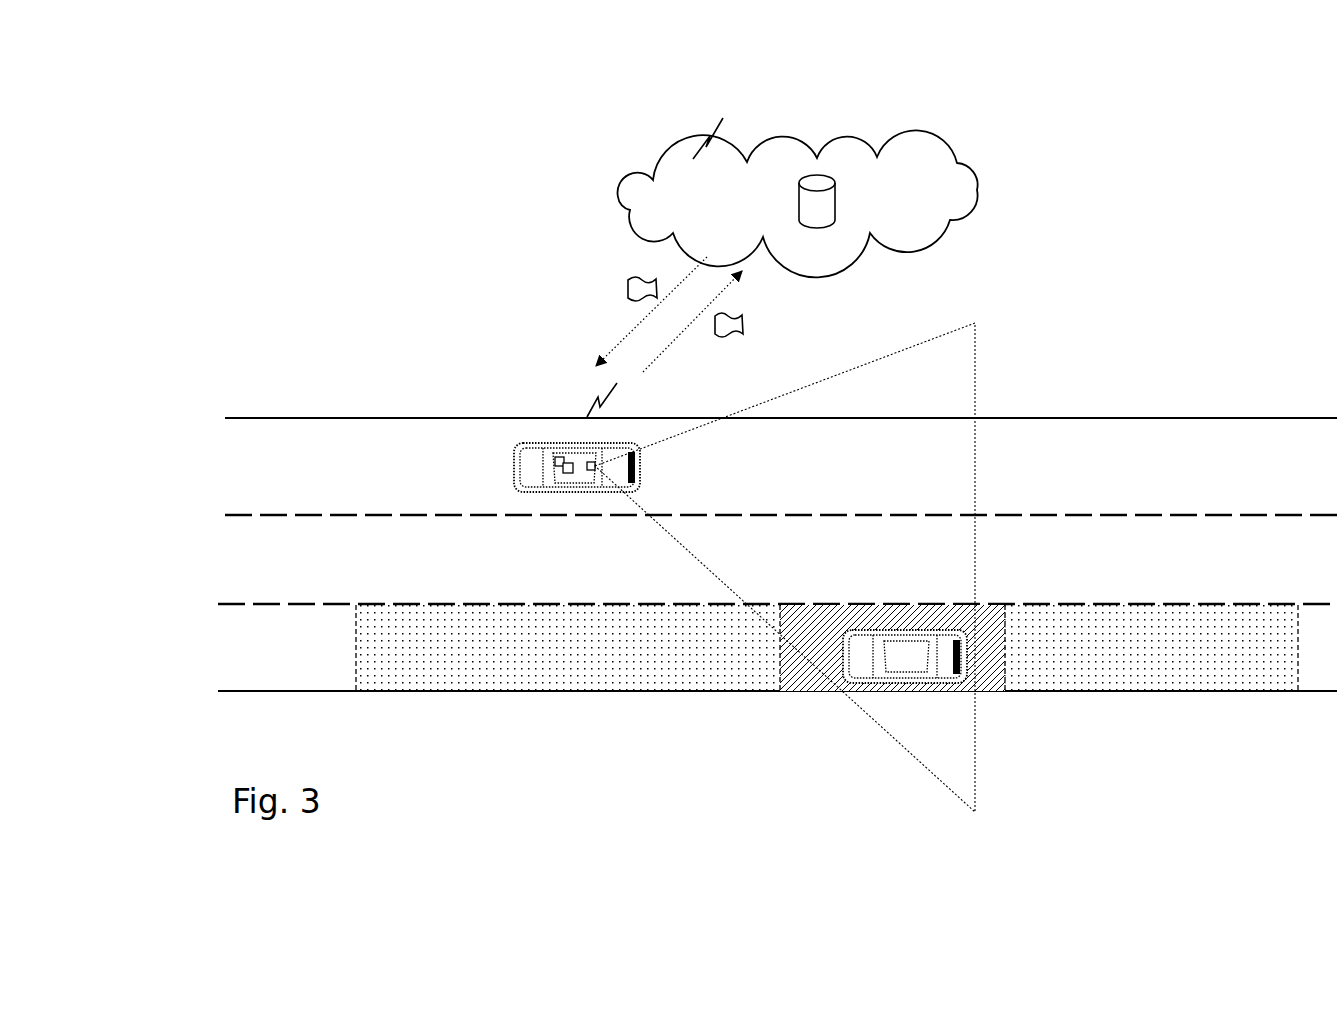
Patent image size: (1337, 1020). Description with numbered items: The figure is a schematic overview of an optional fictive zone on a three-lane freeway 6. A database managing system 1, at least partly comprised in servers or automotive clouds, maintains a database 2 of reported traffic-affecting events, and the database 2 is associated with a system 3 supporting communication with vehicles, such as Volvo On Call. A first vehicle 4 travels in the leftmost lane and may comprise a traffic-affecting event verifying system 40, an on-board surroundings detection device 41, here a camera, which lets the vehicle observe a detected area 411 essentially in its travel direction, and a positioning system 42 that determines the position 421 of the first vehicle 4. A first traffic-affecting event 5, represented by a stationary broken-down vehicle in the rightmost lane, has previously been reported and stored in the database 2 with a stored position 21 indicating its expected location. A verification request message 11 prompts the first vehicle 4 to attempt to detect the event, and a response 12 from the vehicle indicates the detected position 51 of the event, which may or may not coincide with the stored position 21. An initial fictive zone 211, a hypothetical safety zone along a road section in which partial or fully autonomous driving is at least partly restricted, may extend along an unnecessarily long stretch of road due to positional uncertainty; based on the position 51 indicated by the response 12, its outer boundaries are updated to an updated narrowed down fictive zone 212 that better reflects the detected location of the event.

The database managing system 1 is at (290, 127).
The database 2 is at (862, 168).
The stored position 21 is at (828, 172).
The system supporting communication with one or more vehicles 3 is at (625, 182).
The first vehicle 4 is at (512, 472).
The position 421 is at (512, 472).
The traffic-affecting event verifying system 40 is at (556, 458).
The on-board surroundings detection device 41 is at (590, 470).
The detected area 411 is at (960, 362).
The positioning system 42 is at (567, 473).
The verification request message 11 is at (628, 286).
The response 12 is at (740, 318).
The first traffic-affecting event 5 is at (937, 619).
The detected position 51 is at (964, 626).
The freeway 6 is at (1103, 395).
The initial fictive zone 211 is at (485, 680).
The updated narrowed down fictive zone 212 is at (793, 680).